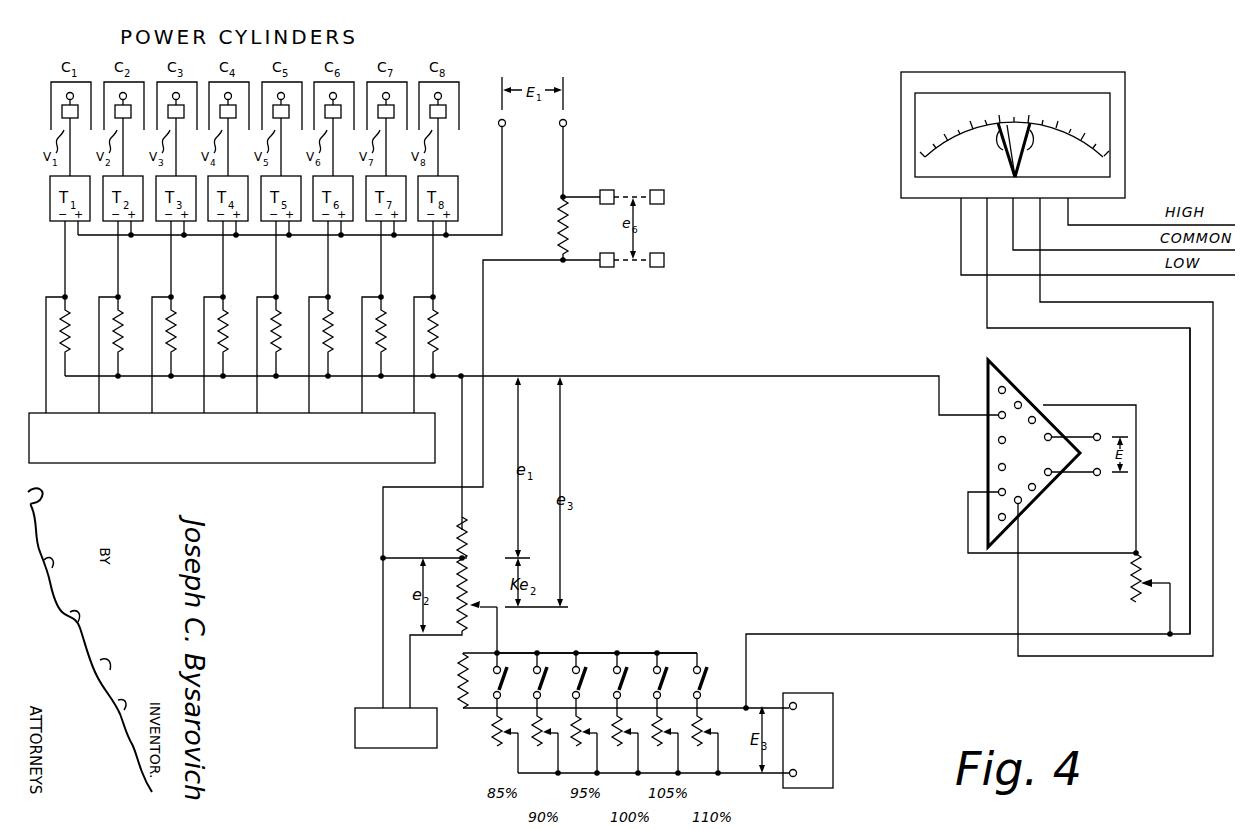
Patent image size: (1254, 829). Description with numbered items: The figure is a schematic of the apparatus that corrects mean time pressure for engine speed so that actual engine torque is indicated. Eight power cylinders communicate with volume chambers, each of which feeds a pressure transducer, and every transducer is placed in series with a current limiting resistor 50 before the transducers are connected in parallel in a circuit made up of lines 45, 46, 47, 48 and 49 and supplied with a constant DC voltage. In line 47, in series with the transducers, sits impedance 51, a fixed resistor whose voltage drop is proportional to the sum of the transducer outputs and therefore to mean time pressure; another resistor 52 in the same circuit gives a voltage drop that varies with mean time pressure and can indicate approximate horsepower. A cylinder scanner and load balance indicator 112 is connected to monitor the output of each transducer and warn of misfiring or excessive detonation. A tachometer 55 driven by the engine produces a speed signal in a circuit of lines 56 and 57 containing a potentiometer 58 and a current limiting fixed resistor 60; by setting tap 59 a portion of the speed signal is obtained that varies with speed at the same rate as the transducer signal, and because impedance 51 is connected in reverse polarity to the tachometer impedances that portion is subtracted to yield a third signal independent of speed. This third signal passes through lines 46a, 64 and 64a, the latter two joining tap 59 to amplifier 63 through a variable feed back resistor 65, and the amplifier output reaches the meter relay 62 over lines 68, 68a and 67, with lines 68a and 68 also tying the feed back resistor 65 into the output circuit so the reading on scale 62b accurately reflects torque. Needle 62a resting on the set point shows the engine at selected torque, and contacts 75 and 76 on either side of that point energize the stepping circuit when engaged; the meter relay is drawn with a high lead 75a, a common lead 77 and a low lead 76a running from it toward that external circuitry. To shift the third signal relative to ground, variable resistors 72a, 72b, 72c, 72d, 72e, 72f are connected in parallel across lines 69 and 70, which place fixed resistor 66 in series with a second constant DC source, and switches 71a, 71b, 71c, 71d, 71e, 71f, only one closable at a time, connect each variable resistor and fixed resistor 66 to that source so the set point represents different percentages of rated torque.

The line 45 is at (292, 198).
The line 46 is at (269, 350).
The line 46a is at (729, 368).
The line 47 is at (500, 419).
The line 48 is at (448, 567).
The line 49 is at (445, 409).
The current limiting resistor 50 is at (242, 336).
The impedance 51 is at (486, 515).
The resistor 52 is at (543, 191).
The tachometer 55 is at (385, 754).
The line 56 is at (375, 680).
The line 57 is at (358, 631).
The potentiometer 58 is at (436, 655).
The tap 59 is at (483, 627).
The current limiting fixed resistor 60 is at (484, 548).
The meter relay 62 is at (1055, 132).
The needle 62a is at (957, 185).
The scale 62b is at (1062, 134).
The amplifier 63 is at (1044, 453).
The line 64 is at (966, 454).
The line 64a is at (1015, 536).
The variable feed back resistor 65 is at (1115, 593).
The fixed resistor 66 is at (449, 680).
The line 67 is at (1124, 452).
The line 68 is at (1169, 481).
The line 68a is at (1091, 480).
The line 69 is at (598, 612).
The line 70 is at (791, 758).
The switch 71a is at (519, 662).
The switch 71b is at (569, 656).
The switch 71c is at (595, 668).
The switch 71d is at (639, 656).
The switch 71e is at (676, 668).
The switch 71f is at (720, 656).
The variable resistor 72a is at (486, 740).
The variable resistor 72b is at (542, 742).
The variable resistor 72c is at (582, 742).
The variable resistor 72d is at (622, 742).
The variable resistor 72e is at (662, 742).
The variable resistor 72f is at (702, 742).
The contact 75 is at (1036, 103).
The high limit lead 75a is at (1151, 211).
The contact 76 is at (1001, 98).
The low limit lead 76a is at (1098, 236).
The common lead 77 is at (1124, 224).
The cylinder scanner and load balance indicator 112 is at (232, 463).